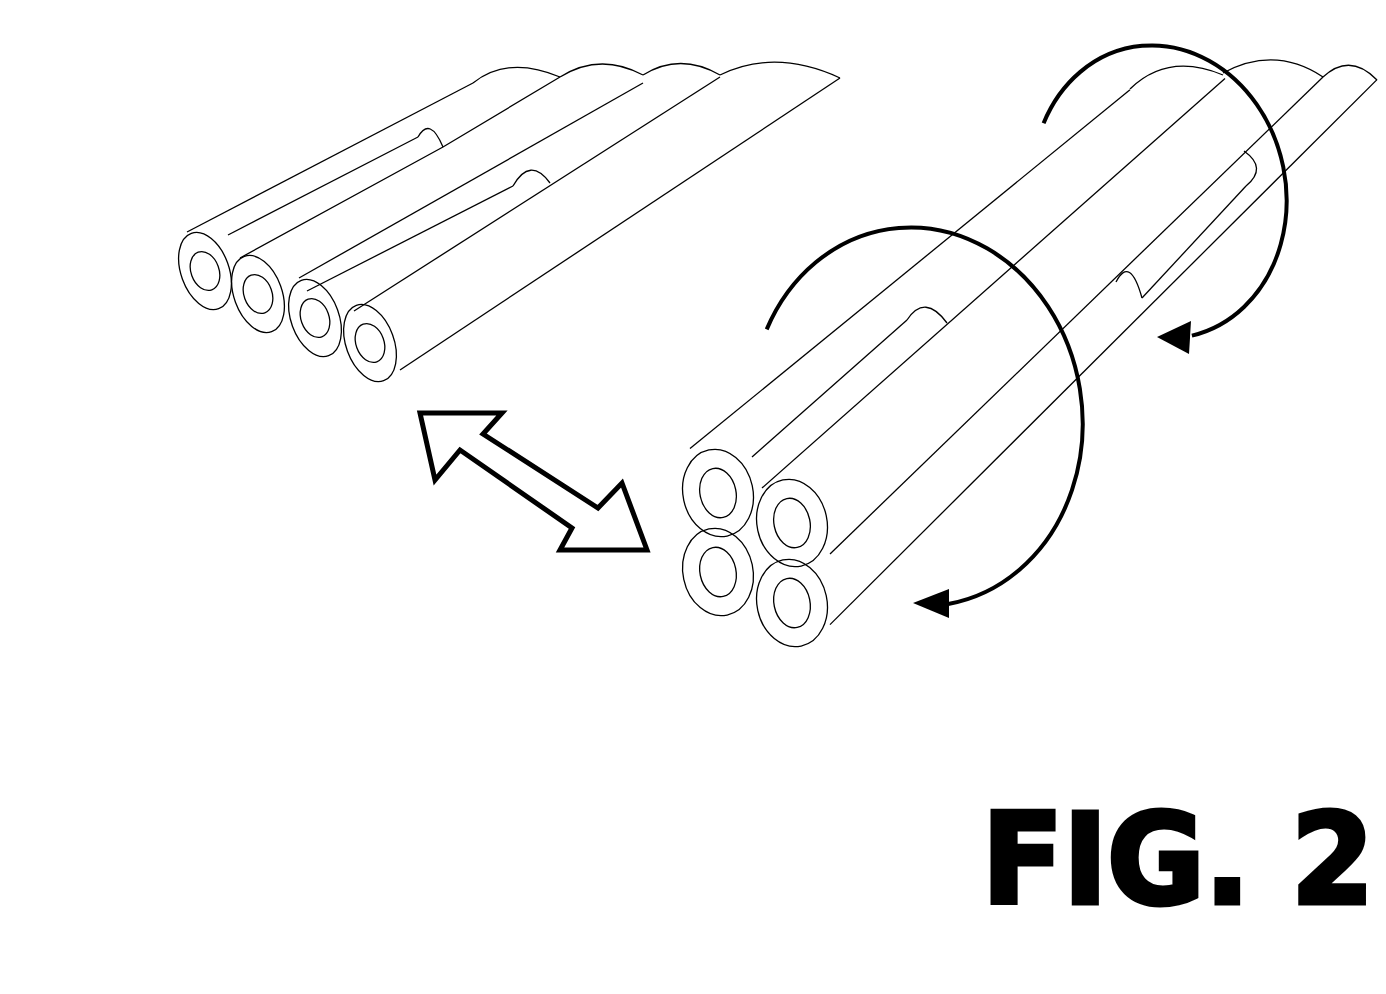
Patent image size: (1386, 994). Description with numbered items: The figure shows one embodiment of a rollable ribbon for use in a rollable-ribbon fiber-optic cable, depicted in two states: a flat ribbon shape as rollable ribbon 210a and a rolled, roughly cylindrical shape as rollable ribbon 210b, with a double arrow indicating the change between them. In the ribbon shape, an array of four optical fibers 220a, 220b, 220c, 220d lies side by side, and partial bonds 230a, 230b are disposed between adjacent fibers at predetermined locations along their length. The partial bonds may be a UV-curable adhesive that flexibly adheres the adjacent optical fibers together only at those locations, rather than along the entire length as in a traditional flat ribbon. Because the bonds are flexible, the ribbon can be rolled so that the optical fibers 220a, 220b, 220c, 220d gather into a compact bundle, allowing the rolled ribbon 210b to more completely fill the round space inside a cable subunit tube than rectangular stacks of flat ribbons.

The rollable ribbon 210a is at (278, 551).
The rollable ribbon 210b is at (613, 652).
The optical fiber 220a is at (188, 290).
The optical fiber 220b is at (250, 331).
The optical fiber 220c is at (314, 357).
The optical fiber 220d is at (364, 383).
The partial bond 230a is at (352, 180).
The partial bond 230b is at (812, 402).